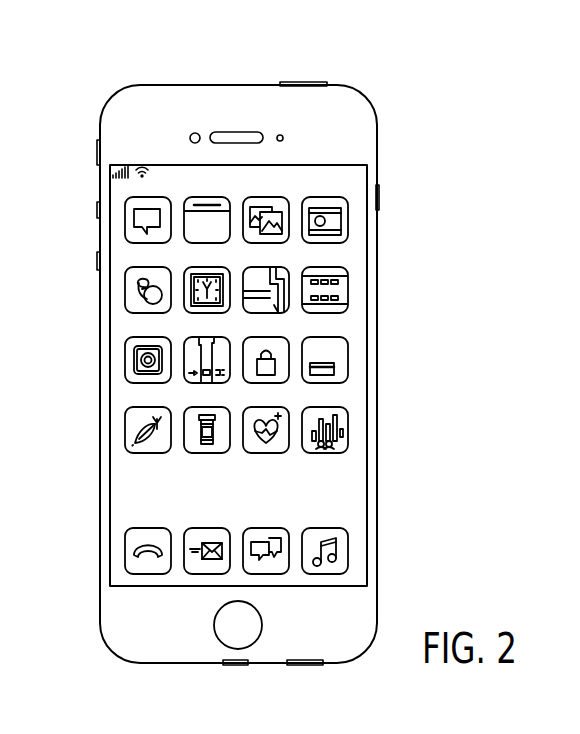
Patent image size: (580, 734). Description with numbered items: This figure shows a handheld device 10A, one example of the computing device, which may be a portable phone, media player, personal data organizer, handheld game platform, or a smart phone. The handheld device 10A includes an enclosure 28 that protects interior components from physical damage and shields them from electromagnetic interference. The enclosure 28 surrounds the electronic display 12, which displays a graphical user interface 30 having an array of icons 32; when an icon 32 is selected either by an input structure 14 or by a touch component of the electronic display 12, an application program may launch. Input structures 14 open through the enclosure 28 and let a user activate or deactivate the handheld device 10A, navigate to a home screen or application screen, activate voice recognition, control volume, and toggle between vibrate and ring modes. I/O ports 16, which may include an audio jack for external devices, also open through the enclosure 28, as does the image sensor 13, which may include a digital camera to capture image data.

The handheld device 10A is at (90, 76).
The electronic display 12 is at (368, 352).
The image sensor 13 is at (197, 133).
The input structures 14 is at (304, 82).
The I/O ports 16 is at (238, 663).
The enclosure 28 is at (377, 166).
The graphical user interface 30 is at (342, 256).
The icon 32 is at (276, 420).